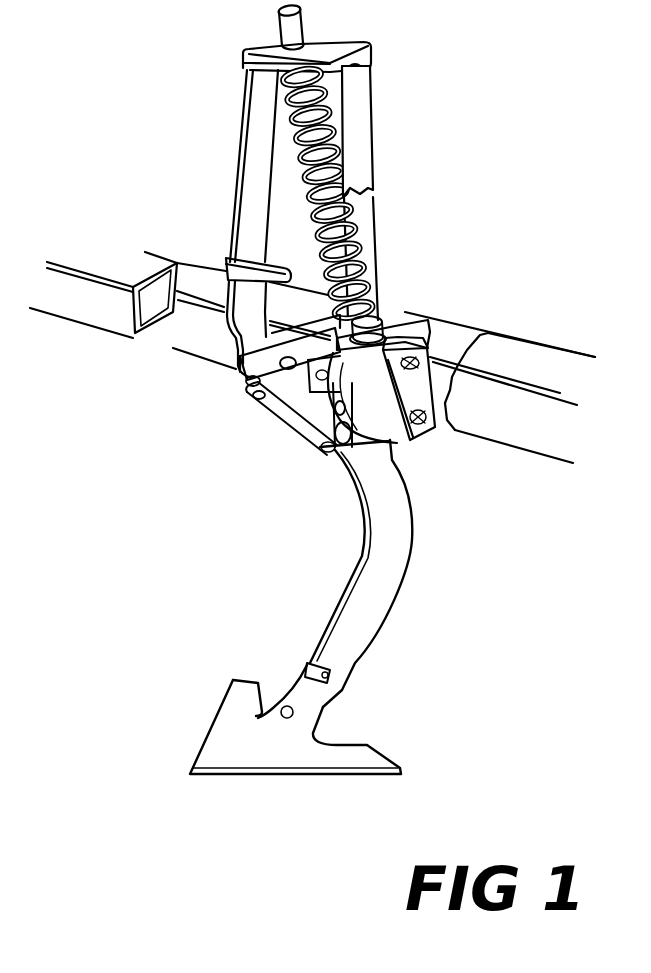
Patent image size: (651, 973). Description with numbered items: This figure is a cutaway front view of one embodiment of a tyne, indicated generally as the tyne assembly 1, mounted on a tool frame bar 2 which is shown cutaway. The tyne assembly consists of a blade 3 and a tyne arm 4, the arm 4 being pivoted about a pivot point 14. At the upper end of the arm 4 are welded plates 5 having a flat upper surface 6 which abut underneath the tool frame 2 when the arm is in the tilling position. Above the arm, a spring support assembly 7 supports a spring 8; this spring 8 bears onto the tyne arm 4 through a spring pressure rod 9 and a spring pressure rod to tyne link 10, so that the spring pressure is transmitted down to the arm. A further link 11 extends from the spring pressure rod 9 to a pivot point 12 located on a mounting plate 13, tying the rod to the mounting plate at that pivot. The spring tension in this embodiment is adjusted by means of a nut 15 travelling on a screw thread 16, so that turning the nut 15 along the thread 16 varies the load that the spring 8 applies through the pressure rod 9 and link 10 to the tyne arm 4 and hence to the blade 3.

The cultivator tool assembly 1 is at (437, 55).
The tool frame bar 2 is at (108, 265).
The blade 3 is at (243, 733).
The tyne arm 4 is at (383, 562).
The welded plates 5 is at (248, 387).
The flat upper surface 6 is at (240, 370).
The spring support assembly 7 is at (265, 106).
The spring 8 is at (362, 216).
The spring pressure rod 9 is at (393, 334).
The spring pressure rod to tyne link 10 is at (420, 415).
The further link 11 is at (400, 453).
The pivot point 12 is at (330, 453).
The mounting plate 13 is at (293, 437).
The pivot point 14 is at (280, 423).
The nut 15 is at (378, 328).
The screw thread 16 is at (388, 318).